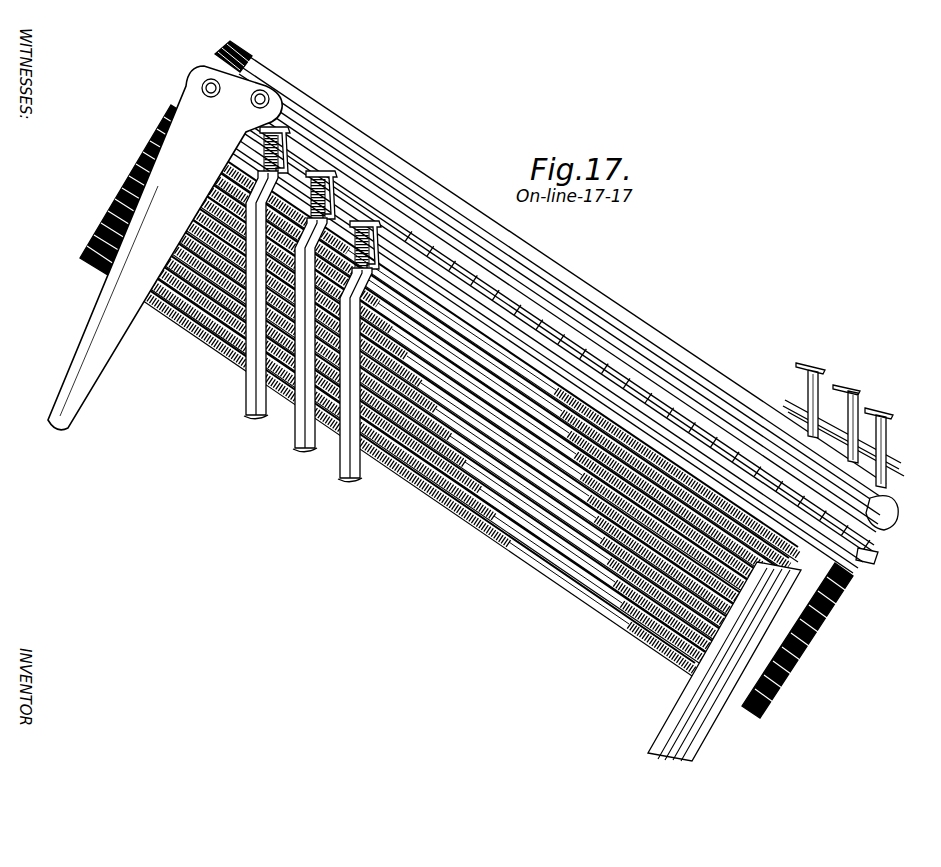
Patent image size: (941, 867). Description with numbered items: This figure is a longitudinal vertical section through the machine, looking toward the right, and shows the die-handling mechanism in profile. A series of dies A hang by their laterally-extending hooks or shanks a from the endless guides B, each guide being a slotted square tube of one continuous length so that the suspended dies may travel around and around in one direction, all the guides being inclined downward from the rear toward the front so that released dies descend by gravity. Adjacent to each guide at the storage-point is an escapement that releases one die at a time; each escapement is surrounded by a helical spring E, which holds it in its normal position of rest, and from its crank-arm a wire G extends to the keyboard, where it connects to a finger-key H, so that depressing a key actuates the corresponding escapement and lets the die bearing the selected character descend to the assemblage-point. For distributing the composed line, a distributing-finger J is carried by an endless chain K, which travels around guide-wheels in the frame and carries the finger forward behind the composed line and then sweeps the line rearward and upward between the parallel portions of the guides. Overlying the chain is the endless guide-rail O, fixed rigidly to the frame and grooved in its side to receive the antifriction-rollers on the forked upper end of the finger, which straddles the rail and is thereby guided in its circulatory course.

The endless guide-rail O is at (345, 133).
The wire G is at (467, 230).
The endless chain K is at (523, 253).
The laterally-extending hook or shank a is at (240, 330).
The helical spring E is at (300, 113).
The dies A is at (262, 415).
The endless guides B is at (822, 578).
The distributing-finger J is at (165, 248).
The finger-key H is at (875, 396).